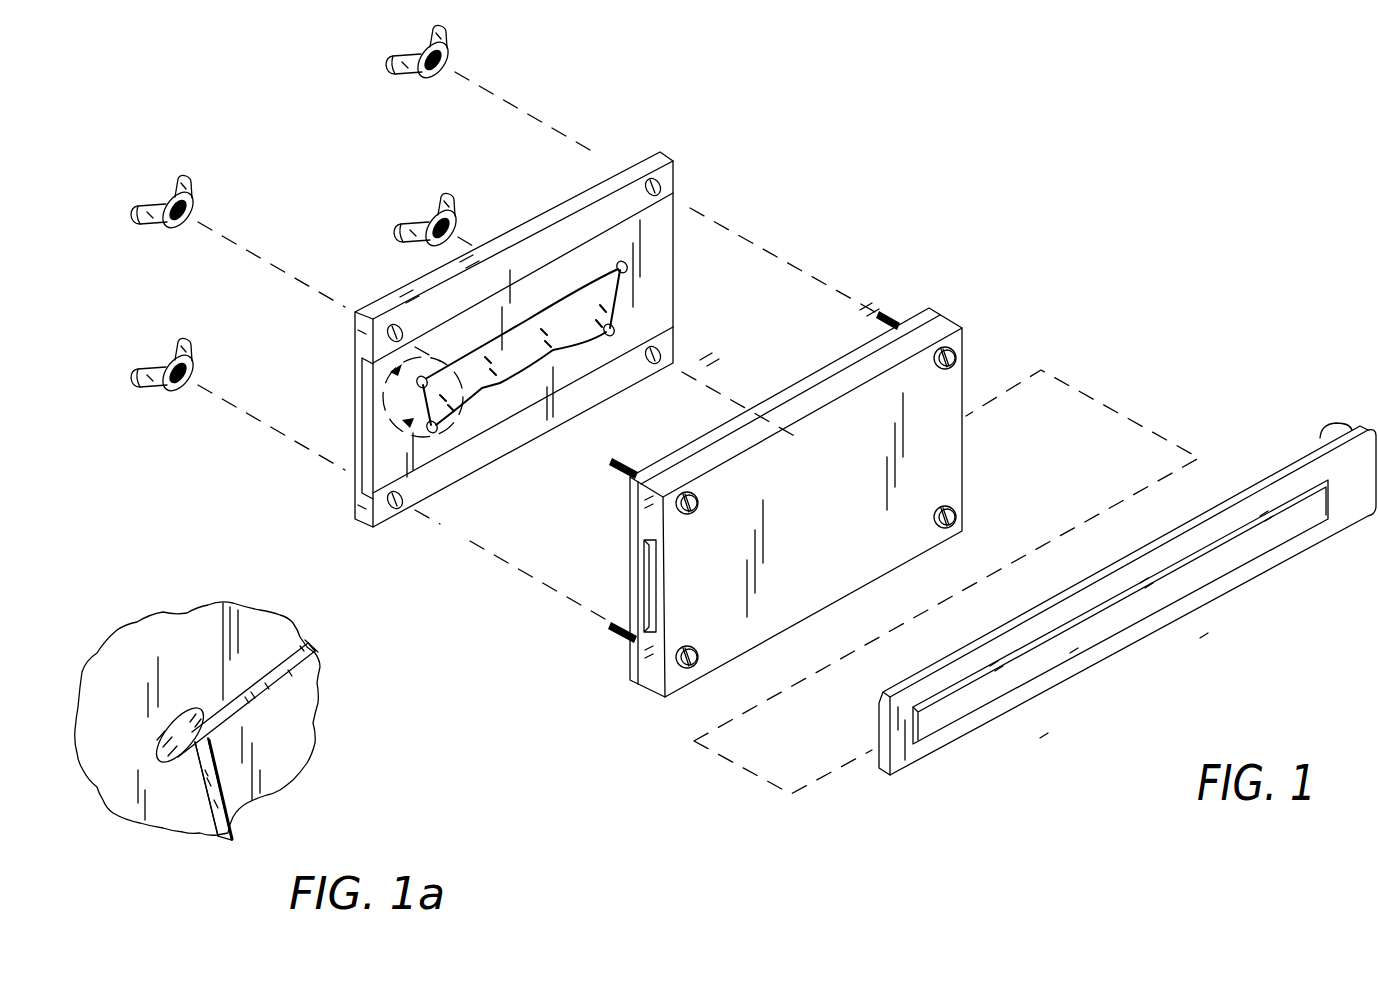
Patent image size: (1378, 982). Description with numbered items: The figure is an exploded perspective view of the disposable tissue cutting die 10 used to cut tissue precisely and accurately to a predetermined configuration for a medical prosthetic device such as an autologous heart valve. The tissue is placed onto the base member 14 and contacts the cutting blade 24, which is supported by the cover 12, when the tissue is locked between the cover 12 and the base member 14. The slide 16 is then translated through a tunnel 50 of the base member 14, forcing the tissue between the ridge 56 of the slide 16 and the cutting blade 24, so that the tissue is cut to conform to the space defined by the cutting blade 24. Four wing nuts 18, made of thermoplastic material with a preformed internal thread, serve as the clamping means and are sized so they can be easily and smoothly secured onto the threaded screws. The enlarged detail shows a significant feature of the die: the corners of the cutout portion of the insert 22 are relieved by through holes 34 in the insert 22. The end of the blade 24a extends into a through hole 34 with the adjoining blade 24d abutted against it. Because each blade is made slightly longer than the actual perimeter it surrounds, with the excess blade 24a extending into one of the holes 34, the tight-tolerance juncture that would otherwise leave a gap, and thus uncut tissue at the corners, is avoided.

In FIG. 1, the tissue cutting die 10 is at (1040, 153).
In FIG. 1, the cover 12 is at (723, 138).
In FIG. 1, the base member 14 is at (623, 707).
In FIG. 1, the slide 16 is at (1220, 592).
In FIG. 1, the wing nuts 18 is at (440, 205).
In FIG. 1, the tunnel 50 is at (650, 588).
In FIG. 1, the ridge 56 is at (1331, 426).
In FIG. 1a, the insert 22 is at (118, 733).
In FIG. 1a, the through hole 34 is at (197, 702).
In FIG. 1a, the cutting blade 24 is at (228, 792).
In FIG. 1a, the blade end 24a is at (316, 650).
In FIG. 1a, the adjoining blade 24d is at (204, 800).